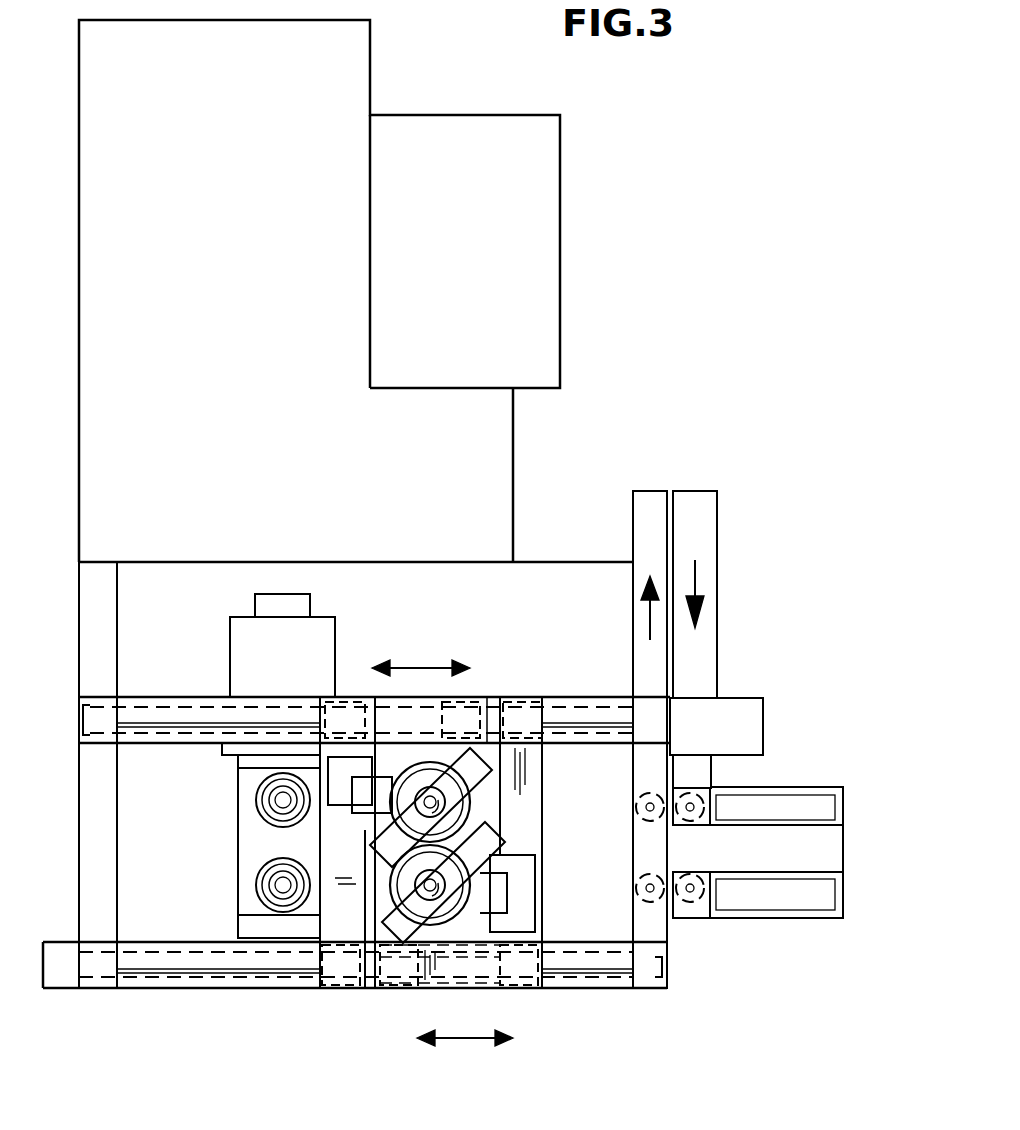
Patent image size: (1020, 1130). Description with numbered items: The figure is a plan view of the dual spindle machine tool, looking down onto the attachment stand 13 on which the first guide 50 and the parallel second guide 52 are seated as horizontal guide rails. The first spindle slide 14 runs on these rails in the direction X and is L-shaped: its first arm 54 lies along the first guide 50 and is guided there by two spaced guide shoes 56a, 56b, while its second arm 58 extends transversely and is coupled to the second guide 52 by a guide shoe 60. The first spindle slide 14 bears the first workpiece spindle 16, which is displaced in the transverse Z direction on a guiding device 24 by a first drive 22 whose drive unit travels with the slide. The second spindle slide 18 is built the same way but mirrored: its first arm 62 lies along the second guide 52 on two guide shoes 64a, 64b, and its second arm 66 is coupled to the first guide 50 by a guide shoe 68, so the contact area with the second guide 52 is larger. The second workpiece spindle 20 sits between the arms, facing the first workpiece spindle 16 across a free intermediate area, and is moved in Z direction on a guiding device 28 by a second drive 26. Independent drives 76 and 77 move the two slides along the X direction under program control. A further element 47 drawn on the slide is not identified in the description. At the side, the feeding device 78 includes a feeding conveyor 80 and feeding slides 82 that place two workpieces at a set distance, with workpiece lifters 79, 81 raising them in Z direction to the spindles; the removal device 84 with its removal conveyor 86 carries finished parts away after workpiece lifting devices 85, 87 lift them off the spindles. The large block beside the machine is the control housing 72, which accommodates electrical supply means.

The control housing 72 is at (100, 190).
The removal device 84 is at (675, 470).
The removal conveyor 86 is at (633, 510).
The feeding device 78 is at (722, 532).
The feeding conveyor 80 is at (700, 652).
The drive 76 is at (755, 735).
The feeding slides 82 is at (852, 784).
The drive unit 47 is at (245, 640).
The guide shoe 64a is at (350, 710).
The first arm 62 is at (373, 712).
The second spindle slide 18 is at (415, 720).
The guide shoe 64b is at (462, 710).
The guide shoe 60 is at (527, 710).
The second guide 52 is at (570, 712).
The guiding device 28 is at (320, 783).
The second drive 26 is at (367, 803).
The second workpiece spindle 20 is at (450, 782).
The second arm 58 is at (505, 808).
The guiding device 24 is at (538, 858).
The first drive 22 is at (492, 883).
The first workpiece spindle 16 is at (510, 915).
The workpiece lifting device 85 is at (650, 820).
The workpiece lifter 79 is at (700, 818).
The workpiece lifting device 87 is at (650, 900).
The workpiece lifter 81 is at (700, 902).
The second arm 66 is at (333, 913).
The guide shoe 68 is at (365, 990).
The guide shoe 56a is at (400, 985).
The first spindle slide 14 is at (445, 990).
The guide shoe 56b is at (530, 985).
The first arm 54 is at (490, 980).
The first guide 50 is at (598, 960).
The attachment stand 13 is at (205, 1010).
The drive 77 is at (62, 972).